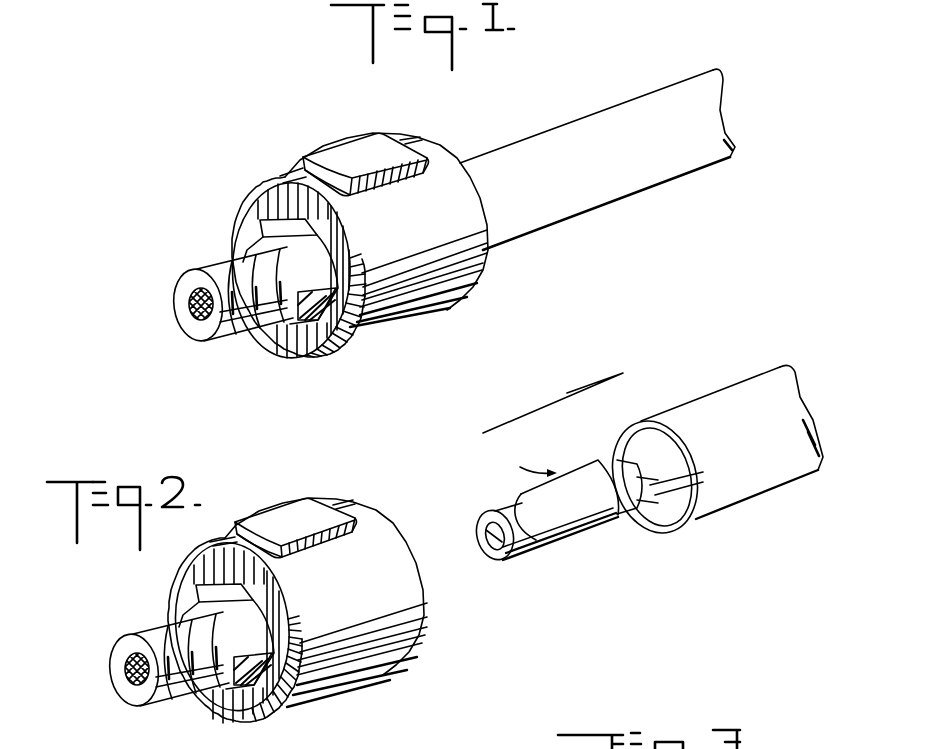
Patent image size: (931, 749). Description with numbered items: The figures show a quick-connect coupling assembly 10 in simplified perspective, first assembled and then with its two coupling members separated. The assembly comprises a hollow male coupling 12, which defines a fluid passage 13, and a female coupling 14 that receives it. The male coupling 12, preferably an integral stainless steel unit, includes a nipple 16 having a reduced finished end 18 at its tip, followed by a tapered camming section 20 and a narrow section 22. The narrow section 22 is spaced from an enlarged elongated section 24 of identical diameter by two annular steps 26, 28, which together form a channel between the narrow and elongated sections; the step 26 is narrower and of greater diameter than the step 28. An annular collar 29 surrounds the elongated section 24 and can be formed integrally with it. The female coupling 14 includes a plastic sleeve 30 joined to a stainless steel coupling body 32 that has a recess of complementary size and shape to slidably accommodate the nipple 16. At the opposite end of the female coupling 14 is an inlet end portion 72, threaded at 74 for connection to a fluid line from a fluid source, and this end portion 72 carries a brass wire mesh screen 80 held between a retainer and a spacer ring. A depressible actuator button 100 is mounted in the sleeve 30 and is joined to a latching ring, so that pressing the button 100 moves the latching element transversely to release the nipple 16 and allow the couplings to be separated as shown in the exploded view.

In FIG. 1, the coupling assembly 10 is at (452, 128).
In FIG. 2, the coupling assembly 10 is at (697, 562).
In FIG. 1, the male coupling 12 is at (597, 152).
In FIG. 2, the male coupling 12 is at (732, 418).
In FIG. 2, the fluid passage 13 is at (488, 548).
In FIG. 1, the female coupling 14 is at (407, 138).
In FIG. 2, the female coupling 14 is at (350, 497).
In FIG. 2, the nipple 16 is at (538, 461).
In FIG. 2, the reduced finished end 18 is at (486, 544).
In FIG. 2, the tapered camming section 20 is at (537, 490).
In FIG. 2, the narrow section 22 is at (620, 522).
In FIG. 2, the enlarged elongated section 24 is at (662, 443).
In FIG. 2, the annular step 26 is at (622, 457).
In FIG. 2, the annular step 28 is at (647, 510).
In FIG. 1, the annular collar 29 is at (622, 110).
In FIG. 2, the annular collar 29 is at (722, 385).
In FIG. 1, the sleeve 30 is at (410, 317).
In FIG. 2, the sleeve 30 is at (323, 697).
In FIG. 1, the coupling body 32 is at (302, 338).
In FIG. 2, the coupling body 32 is at (225, 687).
In FIG. 1, the inlet end portion 72 is at (197, 313).
In FIG. 2, the inlet end portion 72 is at (128, 683).
In FIG. 2, the threads 74 is at (167, 697).
In FIG. 1, the wire mesh screen 80 is at (190, 298).
In FIG. 2, the wire mesh screen 80 is at (125, 667).
In FIG. 1, the actuator button 100 is at (318, 157).
In FIG. 2, the actuator button 100 is at (277, 510).